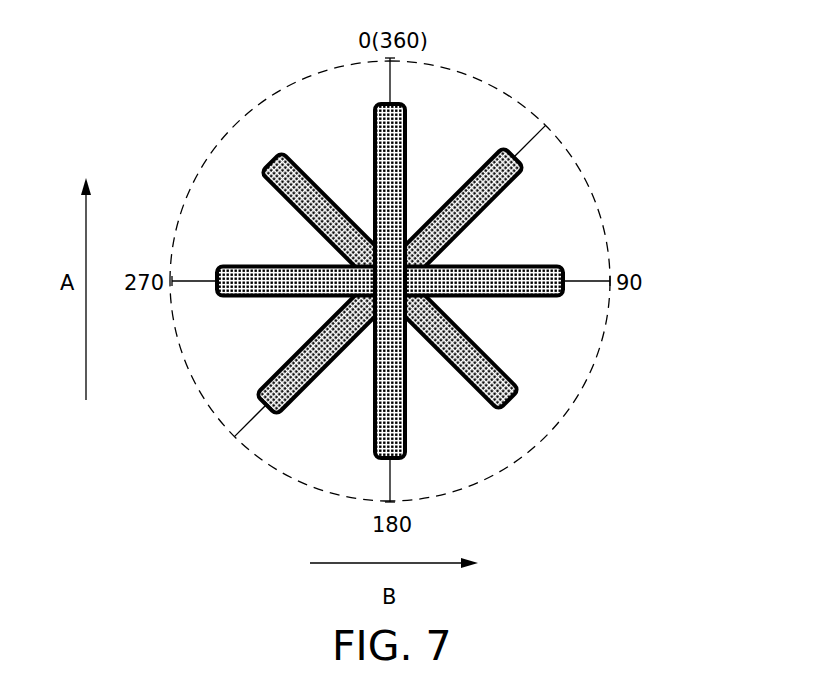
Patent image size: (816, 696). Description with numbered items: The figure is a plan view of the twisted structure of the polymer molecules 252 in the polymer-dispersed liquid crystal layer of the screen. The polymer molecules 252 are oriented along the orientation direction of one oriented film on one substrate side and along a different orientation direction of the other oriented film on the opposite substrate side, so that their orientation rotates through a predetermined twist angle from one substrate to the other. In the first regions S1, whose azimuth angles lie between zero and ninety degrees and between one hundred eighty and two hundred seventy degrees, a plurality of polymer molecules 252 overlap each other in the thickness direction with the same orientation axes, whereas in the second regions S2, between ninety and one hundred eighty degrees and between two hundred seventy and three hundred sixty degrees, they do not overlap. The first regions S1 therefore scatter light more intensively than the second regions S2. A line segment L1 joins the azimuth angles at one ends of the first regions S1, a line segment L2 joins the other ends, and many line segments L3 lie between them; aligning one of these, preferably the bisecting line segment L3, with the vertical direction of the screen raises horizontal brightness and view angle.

The polymer molecules 252 is at (257, 266).
The line segment L1 is at (390, 88).
The line segment L2 is at (582, 281).
The line segment L3 is at (546, 127).
The first regions S1 is at (558, 174).
The second regions S2 is at (300, 98).